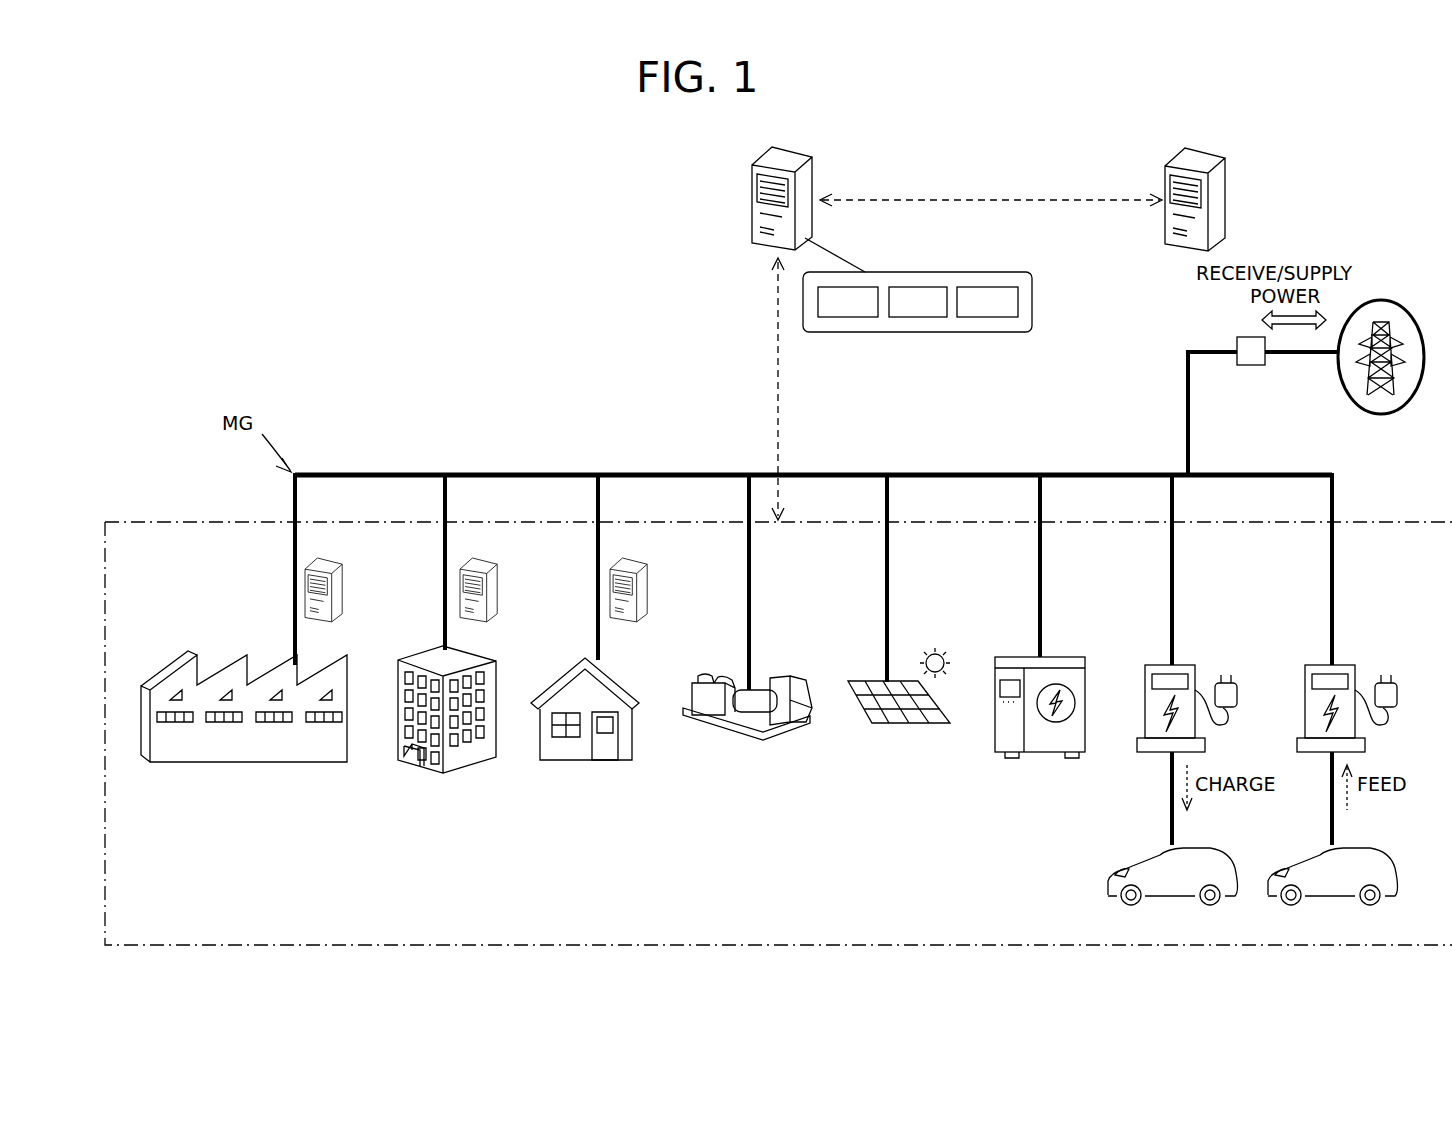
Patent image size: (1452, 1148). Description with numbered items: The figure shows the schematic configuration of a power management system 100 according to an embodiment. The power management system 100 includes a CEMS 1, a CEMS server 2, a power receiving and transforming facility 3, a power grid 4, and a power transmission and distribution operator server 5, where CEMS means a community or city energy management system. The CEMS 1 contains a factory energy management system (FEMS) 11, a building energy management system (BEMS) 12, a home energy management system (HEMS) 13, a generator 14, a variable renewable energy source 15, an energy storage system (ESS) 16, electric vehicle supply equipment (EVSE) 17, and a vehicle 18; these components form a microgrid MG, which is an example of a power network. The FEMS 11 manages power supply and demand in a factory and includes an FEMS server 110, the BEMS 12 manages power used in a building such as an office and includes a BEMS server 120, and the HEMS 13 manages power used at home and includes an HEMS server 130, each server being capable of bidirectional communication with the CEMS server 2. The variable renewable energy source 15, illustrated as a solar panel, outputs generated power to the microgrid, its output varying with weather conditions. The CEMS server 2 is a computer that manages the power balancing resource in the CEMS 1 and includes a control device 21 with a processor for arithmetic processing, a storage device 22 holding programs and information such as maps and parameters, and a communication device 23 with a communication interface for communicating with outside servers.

The power management system 100 is at (210, 202).
The CEMS 1 is at (204, 520).
The CEMS server 2 is at (803, 150).
The power receiving and transforming facility 3 is at (1266, 360).
The power grid 4 is at (1398, 306).
The power transmission and distribution operator server 5 is at (1210, 150).
The control device 21 is at (848, 318).
The storage device 22 is at (918, 318).
The communication device 23 is at (990, 318).
The factory energy management system 11 is at (190, 655).
The building energy management system 12 is at (468, 650).
The home energy management system 13 is at (618, 680).
The generator 14 is at (783, 675).
The variable renewable energy source 15 is at (870, 678).
The energy storage system 16 is at (1062, 657).
The electric vehicle supply equipment 17 is at (1188, 665).
The vehicle 18 is at (1185, 840).
The FEMS server 110 is at (340, 567).
The BEMS server 120 is at (495, 567).
The HEMS server 130 is at (645, 567).